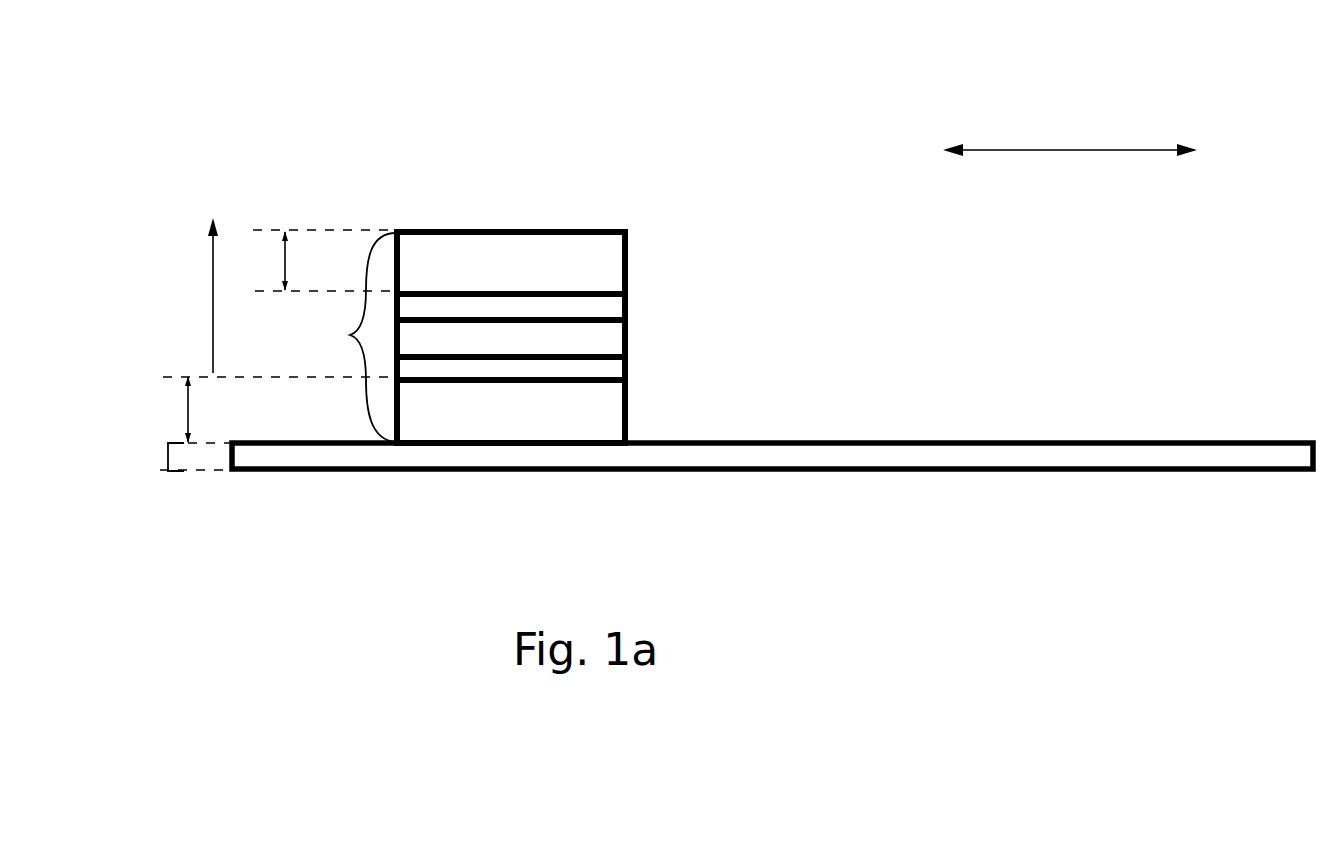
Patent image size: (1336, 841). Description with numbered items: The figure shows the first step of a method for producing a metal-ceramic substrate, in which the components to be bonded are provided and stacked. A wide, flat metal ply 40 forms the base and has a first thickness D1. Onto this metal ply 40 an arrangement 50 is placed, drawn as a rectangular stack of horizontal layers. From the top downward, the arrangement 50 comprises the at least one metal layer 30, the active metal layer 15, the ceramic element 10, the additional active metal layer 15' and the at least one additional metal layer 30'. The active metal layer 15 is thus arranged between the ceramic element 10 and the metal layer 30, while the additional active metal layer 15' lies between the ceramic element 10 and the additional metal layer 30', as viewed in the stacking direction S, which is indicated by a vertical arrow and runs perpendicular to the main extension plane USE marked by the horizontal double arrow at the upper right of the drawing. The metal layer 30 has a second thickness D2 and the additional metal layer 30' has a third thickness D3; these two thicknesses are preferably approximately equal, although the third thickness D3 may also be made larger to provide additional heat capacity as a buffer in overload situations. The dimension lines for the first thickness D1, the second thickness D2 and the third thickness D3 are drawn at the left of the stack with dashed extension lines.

The ceramic element 10 is at (610, 335).
The active metal layer 15 is at (559, 280).
The additional active metal layer 15' is at (555, 369).
The metal layer 30 is at (511, 221).
The additional metal layer 30' is at (545, 411).
The metal ply 40 is at (982, 452).
The arrangement 50 is at (504, 295).
The stacking direction S is at (212, 273).
The first thickness D1 is at (167, 457).
The second thickness D2 is at (290, 250).
The third thickness D3 is at (183, 407).
The main extension plane USE is at (1107, 150).